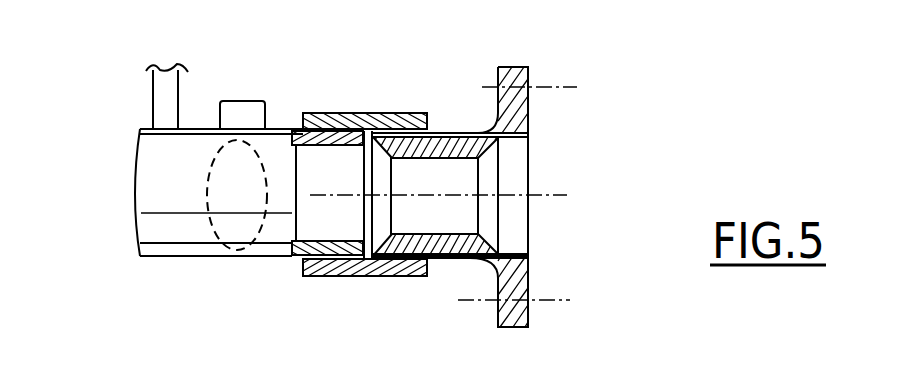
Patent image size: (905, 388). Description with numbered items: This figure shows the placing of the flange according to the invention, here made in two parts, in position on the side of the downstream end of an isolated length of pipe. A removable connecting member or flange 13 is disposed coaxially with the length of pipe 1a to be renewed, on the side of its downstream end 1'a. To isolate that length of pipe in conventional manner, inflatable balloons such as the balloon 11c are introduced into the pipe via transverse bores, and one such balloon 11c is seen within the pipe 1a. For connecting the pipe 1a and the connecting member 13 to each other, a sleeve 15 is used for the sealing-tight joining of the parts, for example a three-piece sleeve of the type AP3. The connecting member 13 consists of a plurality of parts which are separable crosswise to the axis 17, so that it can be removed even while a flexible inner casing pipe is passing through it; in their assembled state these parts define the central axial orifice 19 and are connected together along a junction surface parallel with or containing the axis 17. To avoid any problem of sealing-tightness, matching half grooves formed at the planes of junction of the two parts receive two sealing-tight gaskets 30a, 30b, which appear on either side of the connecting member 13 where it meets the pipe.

The length of pipe 1a is at (180, 227).
The downstream end 1'a is at (341, 152).
The inflatable balloon 11c is at (238, 250).
The connecting member 13 is at (443, 122).
The sleeve 15 is at (357, 277).
The axis 17 is at (567, 196).
The central axial orifice 19 is at (468, 180).
The sealing-tight gasket 30a is at (430, 258).
The sealing-tight gasket 30b is at (463, 130).